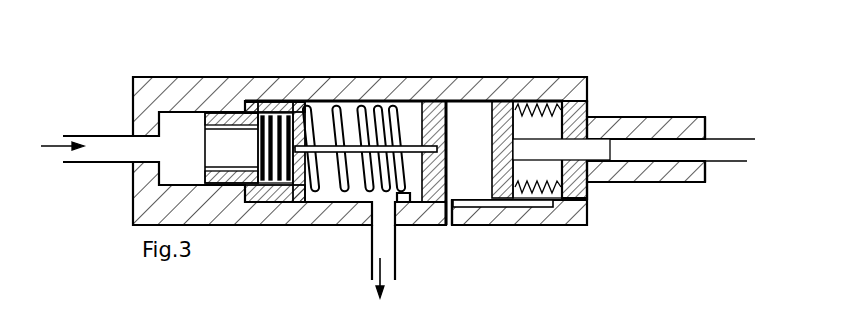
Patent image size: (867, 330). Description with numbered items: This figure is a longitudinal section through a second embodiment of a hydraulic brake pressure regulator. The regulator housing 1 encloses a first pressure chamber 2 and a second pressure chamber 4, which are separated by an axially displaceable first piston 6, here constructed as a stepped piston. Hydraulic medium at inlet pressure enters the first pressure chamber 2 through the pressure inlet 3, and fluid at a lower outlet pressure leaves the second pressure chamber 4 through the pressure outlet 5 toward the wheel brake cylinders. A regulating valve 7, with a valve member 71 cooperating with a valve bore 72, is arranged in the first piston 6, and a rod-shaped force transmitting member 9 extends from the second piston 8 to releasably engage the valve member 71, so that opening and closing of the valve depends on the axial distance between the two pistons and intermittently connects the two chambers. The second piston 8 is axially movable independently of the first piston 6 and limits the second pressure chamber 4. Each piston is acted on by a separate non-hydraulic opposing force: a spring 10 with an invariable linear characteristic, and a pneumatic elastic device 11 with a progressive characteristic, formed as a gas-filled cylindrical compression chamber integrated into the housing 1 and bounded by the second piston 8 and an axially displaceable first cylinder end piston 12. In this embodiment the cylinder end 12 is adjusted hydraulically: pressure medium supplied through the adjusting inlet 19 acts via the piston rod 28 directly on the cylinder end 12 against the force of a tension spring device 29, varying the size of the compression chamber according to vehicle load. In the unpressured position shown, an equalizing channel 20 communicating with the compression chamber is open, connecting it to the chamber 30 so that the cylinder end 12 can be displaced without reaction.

The regulator housing 1 is at (148, 88).
The first pressure chamber 2 is at (178, 120).
The pressure inlet 3 is at (123, 147).
The second pressure chamber 4 is at (332, 187).
The pressure outlet 5 is at (385, 213).
The first piston 6 is at (230, 112).
The regulating valve 7 is at (267, 97).
The valve member 71 is at (277, 110).
The valve bore 72 is at (315, 103).
The second piston 8 is at (422, 103).
The force transmitting member 9 is at (323, 117).
The spring 10 is at (348, 100).
The pneumatic elastic device 11 is at (465, 115).
The first cylinder end piston 12 is at (505, 102).
The adjusting inlet 19 is at (697, 150).
The equalizing channel 20 is at (490, 226).
The piston rod 28 is at (590, 147).
The tension spring device 29 is at (543, 102).
The chamber 30 is at (550, 172).